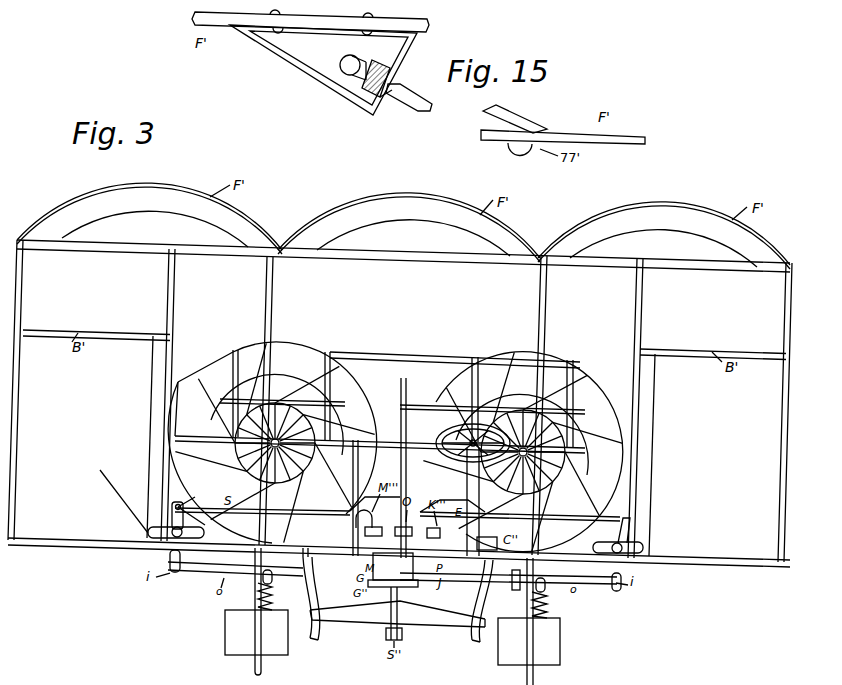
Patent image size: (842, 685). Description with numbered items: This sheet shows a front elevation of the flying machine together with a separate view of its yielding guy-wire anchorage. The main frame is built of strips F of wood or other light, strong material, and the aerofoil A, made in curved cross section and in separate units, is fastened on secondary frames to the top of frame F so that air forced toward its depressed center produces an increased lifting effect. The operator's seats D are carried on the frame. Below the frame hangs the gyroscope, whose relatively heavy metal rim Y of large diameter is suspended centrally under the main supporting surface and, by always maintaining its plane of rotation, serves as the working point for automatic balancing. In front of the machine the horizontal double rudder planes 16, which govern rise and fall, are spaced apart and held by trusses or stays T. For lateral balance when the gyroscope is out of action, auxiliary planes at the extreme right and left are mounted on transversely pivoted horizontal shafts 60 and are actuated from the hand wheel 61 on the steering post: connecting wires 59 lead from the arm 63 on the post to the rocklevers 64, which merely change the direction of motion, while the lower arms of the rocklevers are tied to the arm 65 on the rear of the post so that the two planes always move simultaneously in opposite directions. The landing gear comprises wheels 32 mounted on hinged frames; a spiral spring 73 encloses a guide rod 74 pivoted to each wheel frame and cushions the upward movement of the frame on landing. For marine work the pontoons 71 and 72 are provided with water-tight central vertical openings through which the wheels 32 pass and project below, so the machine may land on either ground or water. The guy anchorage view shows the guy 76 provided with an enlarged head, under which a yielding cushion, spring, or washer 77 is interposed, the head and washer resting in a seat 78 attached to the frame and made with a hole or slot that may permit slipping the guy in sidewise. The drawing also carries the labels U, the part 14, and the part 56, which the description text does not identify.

In FIG. 3, the transversely pivoted horizontal shaft 60 is at (112, 327).
In FIG. 3, the horizontal double rudder plane 16 is at (381, 356).
In FIG. 3, the hand wheel 61 is at (451, 432).
In FIG. 3, the vertical rod 14 is at (445, 448).
In FIG. 3, the connecting wire 59 is at (238, 508).
In FIG. 3, the rocklever 64 is at (618, 535).
In FIG. 3, the arm 65 is at (195, 590).
In FIG. 3, the arm 63 is at (477, 546).
In FIG. 3, the pontoon 71 is at (256, 632).
In FIG. 3, the pontoon 72 is at (529, 641).
In FIG. 3, the spiral spring 73 is at (538, 605).
In FIG. 3, the guide rod 74 is at (536, 588).
In FIG. 3, the wheel 32 is at (262, 668).
In FIG. 3, the pin 56 is at (515, 580).
In FIG. 15, the guy 76 is at (415, 101).
In FIG. 15, the yielding cushion, spring, or washer 77 is at (340, 60).
In FIG. 15, the seat 78 is at (400, 70).
In FIG. 3, the aerofoil A is at (403, 226).
In FIG. 3, the frame strip F is at (270, 298).
In FIG. 3, the truss or stay T is at (232, 372).
In FIG. 3, the fan wheel U is at (395, 447).
In FIG. 3, the operator's seat D is at (352, 498).
In FIG. 3, the gyroscope rim Y is at (488, 596).